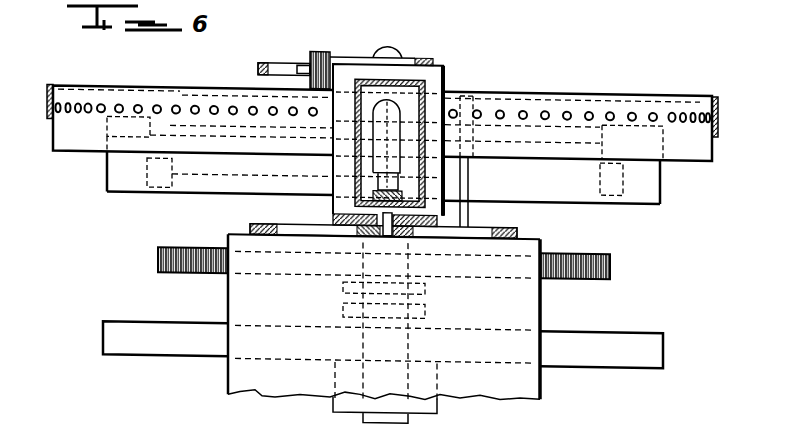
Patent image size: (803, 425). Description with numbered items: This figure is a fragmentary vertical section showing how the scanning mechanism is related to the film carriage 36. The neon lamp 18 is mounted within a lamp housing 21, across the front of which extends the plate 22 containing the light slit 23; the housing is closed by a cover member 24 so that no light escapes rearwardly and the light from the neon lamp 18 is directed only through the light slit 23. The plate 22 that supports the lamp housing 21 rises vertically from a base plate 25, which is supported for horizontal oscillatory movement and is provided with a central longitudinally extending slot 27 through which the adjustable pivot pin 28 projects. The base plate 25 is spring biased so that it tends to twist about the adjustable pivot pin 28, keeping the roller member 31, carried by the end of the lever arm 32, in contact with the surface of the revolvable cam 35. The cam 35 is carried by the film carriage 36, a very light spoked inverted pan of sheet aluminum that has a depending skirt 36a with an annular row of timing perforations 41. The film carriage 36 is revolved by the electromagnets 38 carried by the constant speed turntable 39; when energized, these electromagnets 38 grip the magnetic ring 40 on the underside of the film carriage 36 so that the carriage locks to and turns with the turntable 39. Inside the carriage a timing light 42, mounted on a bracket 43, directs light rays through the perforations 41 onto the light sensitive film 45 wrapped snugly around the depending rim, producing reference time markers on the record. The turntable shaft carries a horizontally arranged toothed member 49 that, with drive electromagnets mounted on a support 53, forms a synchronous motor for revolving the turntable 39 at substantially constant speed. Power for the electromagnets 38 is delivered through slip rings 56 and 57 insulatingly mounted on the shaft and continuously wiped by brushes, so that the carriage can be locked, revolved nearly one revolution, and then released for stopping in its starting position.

The neon lamp 18 is at (389, 140).
The lamp housing 21 is at (317, 124).
The plate 22 is at (345, 154).
The light slit 23 is at (371, 80).
The cover member 24 is at (395, 82).
The base plate 25 is at (332, 222).
The slot 27 is at (361, 241).
The adjustable pivot pin 28 is at (386, 238).
The roller member 31 is at (297, 66).
The lever arm 32 is at (272, 66).
The cam 35 is at (347, 59).
The film carriage 36 is at (578, 95).
The depending skirt 36a is at (55, 142).
The electromagnets 38 is at (107, 172).
The turntable 39 is at (135, 192).
The magnetic ring 40 is at (172, 90).
The timing perforations 41 is at (88, 111).
The timing light 42 is at (473, 96).
The bracket 43 is at (468, 211).
The light sensitive film 45 is at (49, 103).
The toothed member 49 is at (190, 276).
The support 53 is at (640, 352).
The slip ring 56 is at (425, 289).
The slip ring 57 is at (425, 311).